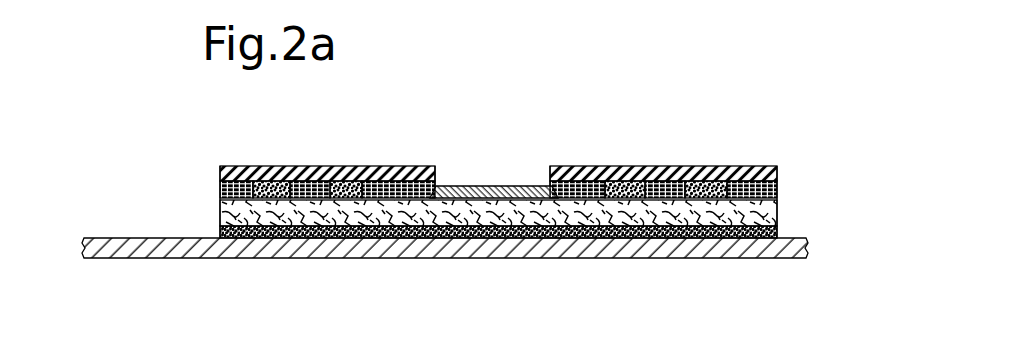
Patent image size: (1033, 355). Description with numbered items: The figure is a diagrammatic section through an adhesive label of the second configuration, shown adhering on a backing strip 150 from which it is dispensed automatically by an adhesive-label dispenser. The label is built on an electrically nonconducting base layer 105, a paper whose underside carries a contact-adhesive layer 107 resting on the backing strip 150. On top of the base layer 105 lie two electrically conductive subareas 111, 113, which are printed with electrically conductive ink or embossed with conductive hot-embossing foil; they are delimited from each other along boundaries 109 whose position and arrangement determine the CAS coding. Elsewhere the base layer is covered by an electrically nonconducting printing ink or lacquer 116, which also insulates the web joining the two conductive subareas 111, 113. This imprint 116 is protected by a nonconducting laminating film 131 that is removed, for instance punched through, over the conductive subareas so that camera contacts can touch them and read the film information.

The base layer 105 is at (772, 217).
The contact-adhesive layer 107 is at (775, 236).
The boundaries 109 is at (444, 170).
The electrically conductive subarea 111 is at (494, 129).
The electrically conductive subarea 113 is at (493, 186).
The electrically nonconducting printing ink or lacquer 116 is at (776, 191).
The nonconducting laminating film 131 is at (752, 167).
The backing strip 150 is at (737, 250).